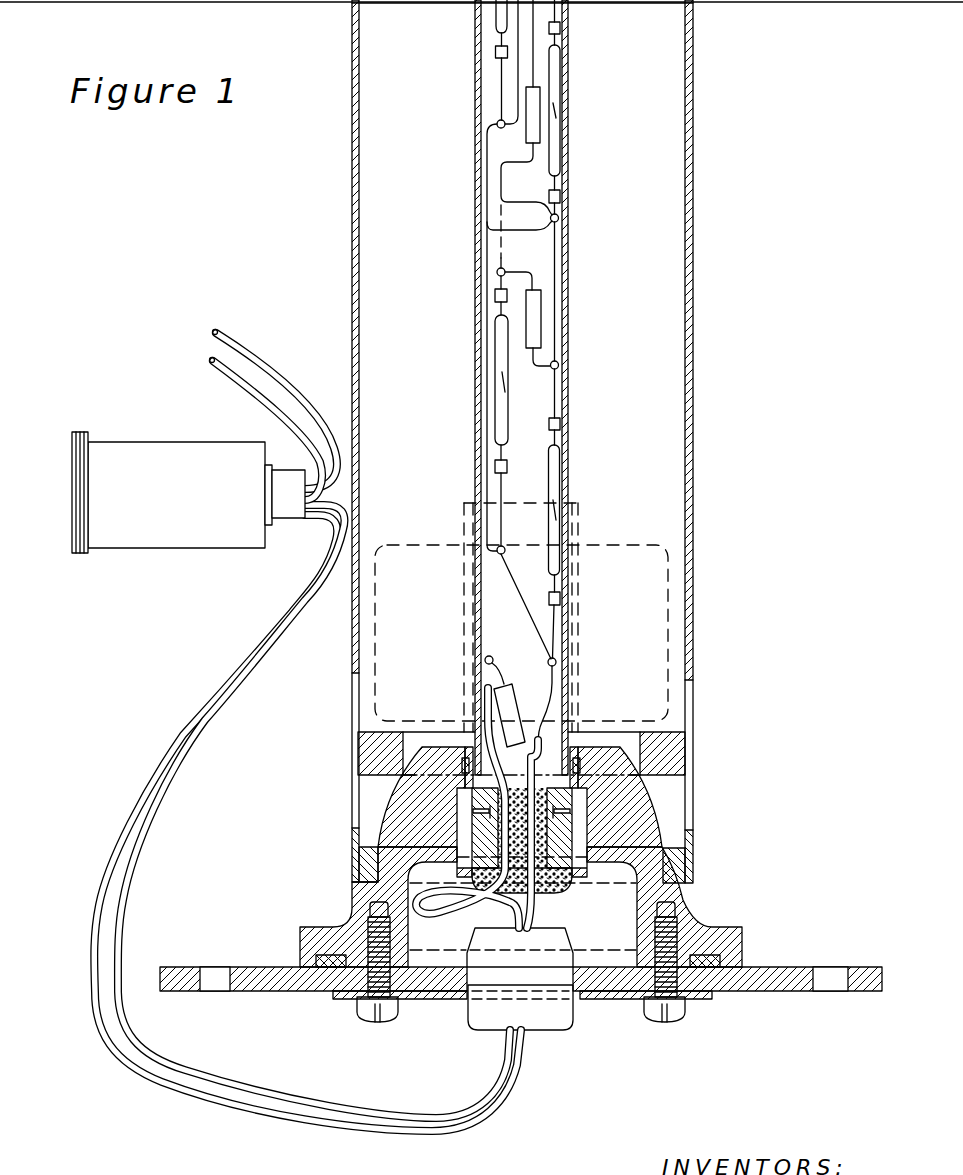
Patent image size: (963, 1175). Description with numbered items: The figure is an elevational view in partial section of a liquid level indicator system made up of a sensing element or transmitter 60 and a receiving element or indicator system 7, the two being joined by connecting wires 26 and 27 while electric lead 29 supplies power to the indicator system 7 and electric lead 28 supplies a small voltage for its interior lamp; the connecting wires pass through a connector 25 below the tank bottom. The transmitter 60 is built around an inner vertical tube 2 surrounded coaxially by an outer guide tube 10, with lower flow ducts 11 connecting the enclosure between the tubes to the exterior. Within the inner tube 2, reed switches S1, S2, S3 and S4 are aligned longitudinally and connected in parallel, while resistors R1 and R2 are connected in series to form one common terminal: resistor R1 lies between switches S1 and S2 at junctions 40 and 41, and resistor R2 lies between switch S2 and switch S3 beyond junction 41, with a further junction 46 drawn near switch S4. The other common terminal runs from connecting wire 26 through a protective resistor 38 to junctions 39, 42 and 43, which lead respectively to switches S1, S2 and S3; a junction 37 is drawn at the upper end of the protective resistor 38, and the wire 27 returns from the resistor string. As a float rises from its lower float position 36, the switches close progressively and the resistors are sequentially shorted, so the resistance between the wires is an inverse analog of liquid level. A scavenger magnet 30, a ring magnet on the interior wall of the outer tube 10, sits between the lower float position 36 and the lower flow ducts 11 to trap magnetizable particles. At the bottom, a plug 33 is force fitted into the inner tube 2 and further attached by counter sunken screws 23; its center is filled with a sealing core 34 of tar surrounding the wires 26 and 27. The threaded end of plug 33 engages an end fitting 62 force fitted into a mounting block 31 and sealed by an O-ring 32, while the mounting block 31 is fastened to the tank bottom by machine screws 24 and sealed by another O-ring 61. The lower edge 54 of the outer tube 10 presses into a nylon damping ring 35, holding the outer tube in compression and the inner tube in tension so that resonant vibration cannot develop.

The reed switch S4 is at (494, 18).
The junction 46 is at (497, 122).
The electrical resistor R2 is at (525, 133).
The reed switch S3 is at (560, 97).
The junction 43 is at (558, 217).
The transmitter 60 is at (732, 178).
The junction 41 is at (498, 273).
The electrical resistor R1 is at (542, 312).
The outer guide tube 10 is at (556, 441).
The reed switch S2 is at (495, 383).
The junction 40 is at (558, 363).
The inner vertical tube 2 is at (570, 417).
The reed switch S1 is at (560, 475).
The electric lead 29 is at (262, 360).
The electric lead 28 is at (257, 398).
The indicator system 7 is at (184, 551).
The lower float position 36 is at (612, 545).
The junction 42 is at (497, 553).
The junction 37 is at (485, 657).
The protective resistor 38 is at (518, 699).
The junction 39 is at (556, 659).
The lower flow ducts 11 is at (352, 679).
The connecting wire 26 is at (485, 712).
The connecting wire 27 is at (181, 728).
The O-ring 32 is at (579, 760).
The end fitting 62 is at (462, 803).
The plug 33 is at (473, 838).
The counter sunken screws 23 is at (590, 812).
The lower edge of outer guide tube 54 is at (350, 843).
The scavenger magnet 30 is at (665, 778).
The nylon damping ring 35 is at (674, 868).
The mounting block 31 is at (680, 903).
The core 34 is at (545, 893).
The O-ring 61 is at (722, 955).
The machine screws 24 is at (362, 1020).
The connector 25 is at (488, 1031).